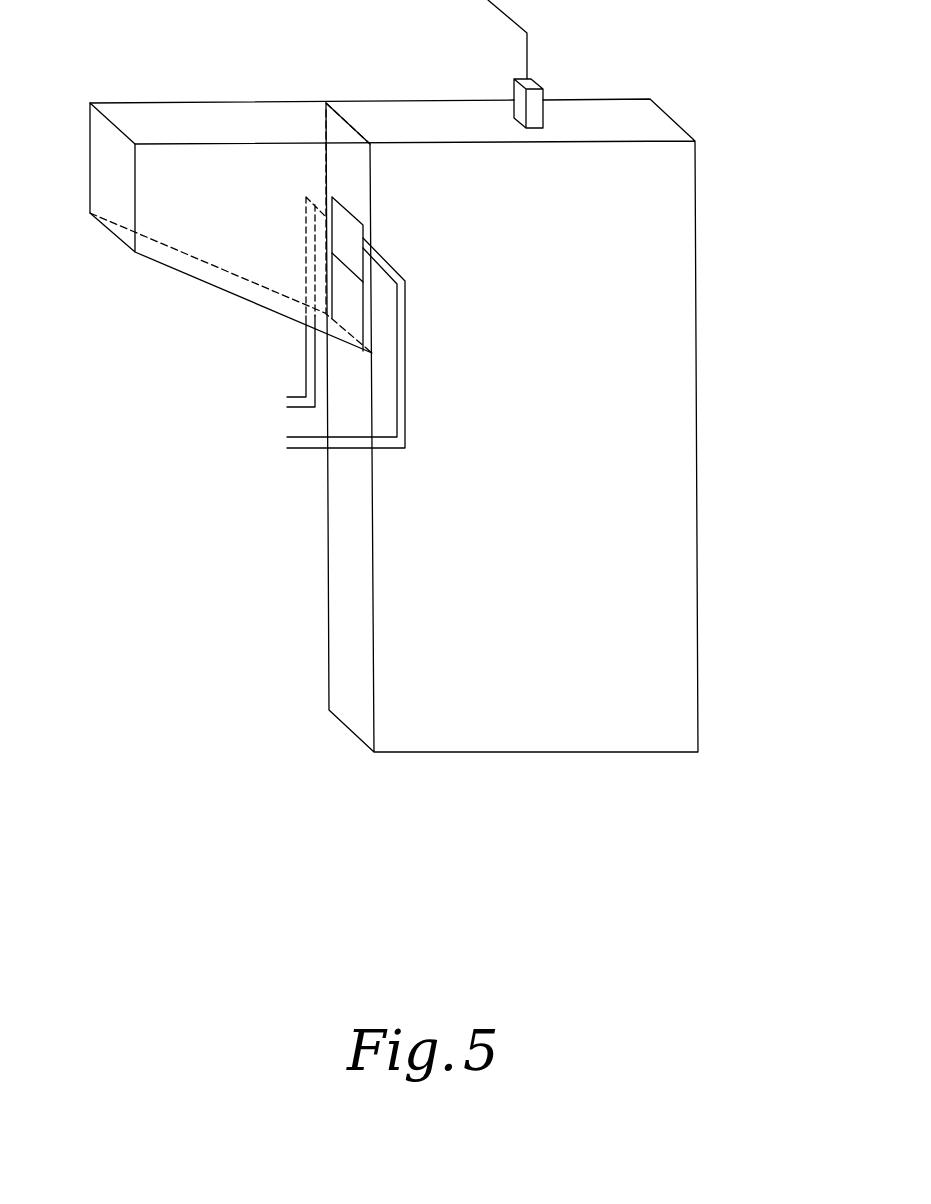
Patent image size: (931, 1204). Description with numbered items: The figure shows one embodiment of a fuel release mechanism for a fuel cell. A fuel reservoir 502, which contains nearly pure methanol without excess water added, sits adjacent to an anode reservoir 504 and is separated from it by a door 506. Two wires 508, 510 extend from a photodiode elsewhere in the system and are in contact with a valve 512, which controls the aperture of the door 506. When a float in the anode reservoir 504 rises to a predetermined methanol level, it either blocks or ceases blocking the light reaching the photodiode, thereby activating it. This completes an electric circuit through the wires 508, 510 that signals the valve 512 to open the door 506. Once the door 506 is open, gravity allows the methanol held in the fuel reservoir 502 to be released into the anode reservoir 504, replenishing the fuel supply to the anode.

The fuel reservoir 502 is at (220, 115).
The anode reservoir 504 is at (677, 317).
The door 506 is at (337, 293).
The wire 508 is at (298, 397).
The wire 510 is at (308, 443).
The valve 512 is at (352, 223).